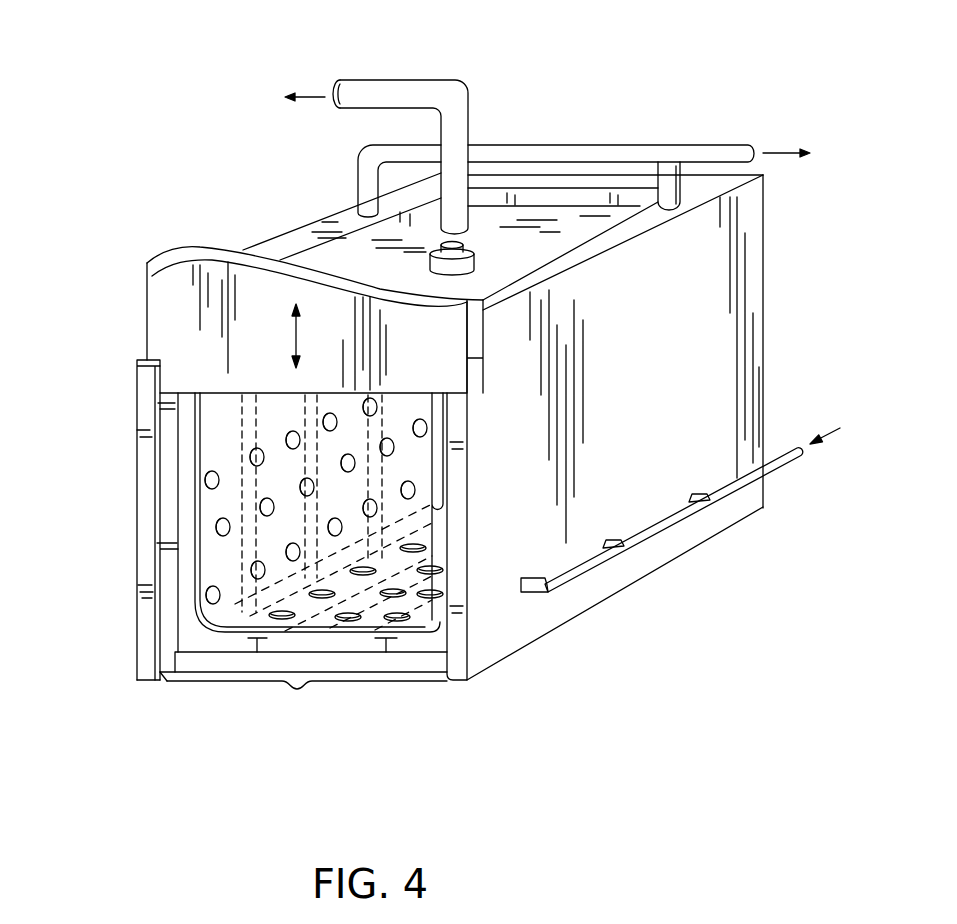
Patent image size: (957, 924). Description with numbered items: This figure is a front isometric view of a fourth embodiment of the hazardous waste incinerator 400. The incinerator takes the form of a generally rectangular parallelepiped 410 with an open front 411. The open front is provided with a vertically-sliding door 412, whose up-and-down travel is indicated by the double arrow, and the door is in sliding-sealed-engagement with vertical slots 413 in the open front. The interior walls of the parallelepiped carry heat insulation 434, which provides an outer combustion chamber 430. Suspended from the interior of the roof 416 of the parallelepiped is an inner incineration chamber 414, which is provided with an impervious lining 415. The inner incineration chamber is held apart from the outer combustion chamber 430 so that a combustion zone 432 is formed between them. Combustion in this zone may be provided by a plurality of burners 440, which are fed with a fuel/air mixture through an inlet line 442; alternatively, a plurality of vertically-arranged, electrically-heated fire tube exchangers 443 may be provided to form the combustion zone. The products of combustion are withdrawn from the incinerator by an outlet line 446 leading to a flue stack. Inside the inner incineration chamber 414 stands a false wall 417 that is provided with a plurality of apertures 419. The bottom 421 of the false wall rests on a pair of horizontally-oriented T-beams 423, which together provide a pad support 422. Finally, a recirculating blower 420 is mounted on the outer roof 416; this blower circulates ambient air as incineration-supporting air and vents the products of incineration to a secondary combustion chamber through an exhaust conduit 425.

The hazardous waste incinerator 400 is at (676, 85).
The rectangular parallelepiped 410 is at (750, 212).
The open front 411 is at (297, 700).
The vertically-sliding door 412 is at (157, 283).
The vertical slots 413 is at (143, 360).
The inner incineration chamber 414 is at (193, 627).
The impervious lining 415 is at (186, 590).
The roof 416 is at (540, 216).
The false wall 417 is at (217, 441).
The apertures 419 is at (213, 555).
The recirculating blower 420 is at (468, 249).
The bottom of the false wall 421 is at (330, 643).
The pad support 422 is at (303, 635).
The T-beams 423 is at (393, 647).
The exhaust conduit 425 is at (405, 85).
The outer combustion chamber 430 is at (707, 350).
The combustion zone 432 is at (138, 677).
The heat insulation 434 is at (168, 516).
The burners 440 is at (521, 586).
The inlet line 442 is at (777, 465).
The electrically-heated fire tube exchangers 443 is at (188, 688).
The outlet line 446 is at (366, 161).